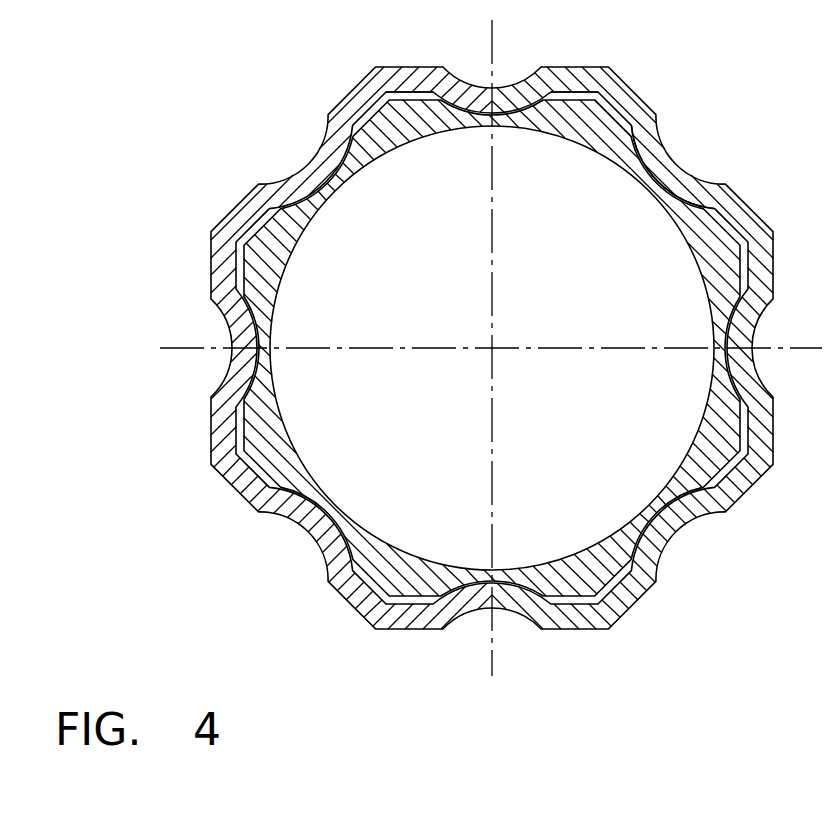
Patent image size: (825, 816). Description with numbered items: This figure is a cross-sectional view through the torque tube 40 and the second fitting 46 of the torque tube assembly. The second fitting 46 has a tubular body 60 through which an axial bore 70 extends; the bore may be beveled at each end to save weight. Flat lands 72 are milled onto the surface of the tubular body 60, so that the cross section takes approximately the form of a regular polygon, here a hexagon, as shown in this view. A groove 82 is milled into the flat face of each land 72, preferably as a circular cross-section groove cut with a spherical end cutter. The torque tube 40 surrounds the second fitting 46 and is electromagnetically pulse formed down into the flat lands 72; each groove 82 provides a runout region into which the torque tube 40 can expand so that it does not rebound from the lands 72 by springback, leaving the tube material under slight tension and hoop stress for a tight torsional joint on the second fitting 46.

The torque tube 40 is at (249, 199).
The second fitting 46 is at (375, 135).
The tubular body 60 is at (603, 143).
The axial bore 70 is at (403, 272).
The flat lands 72 is at (430, 96).
The groove 82 is at (655, 182).